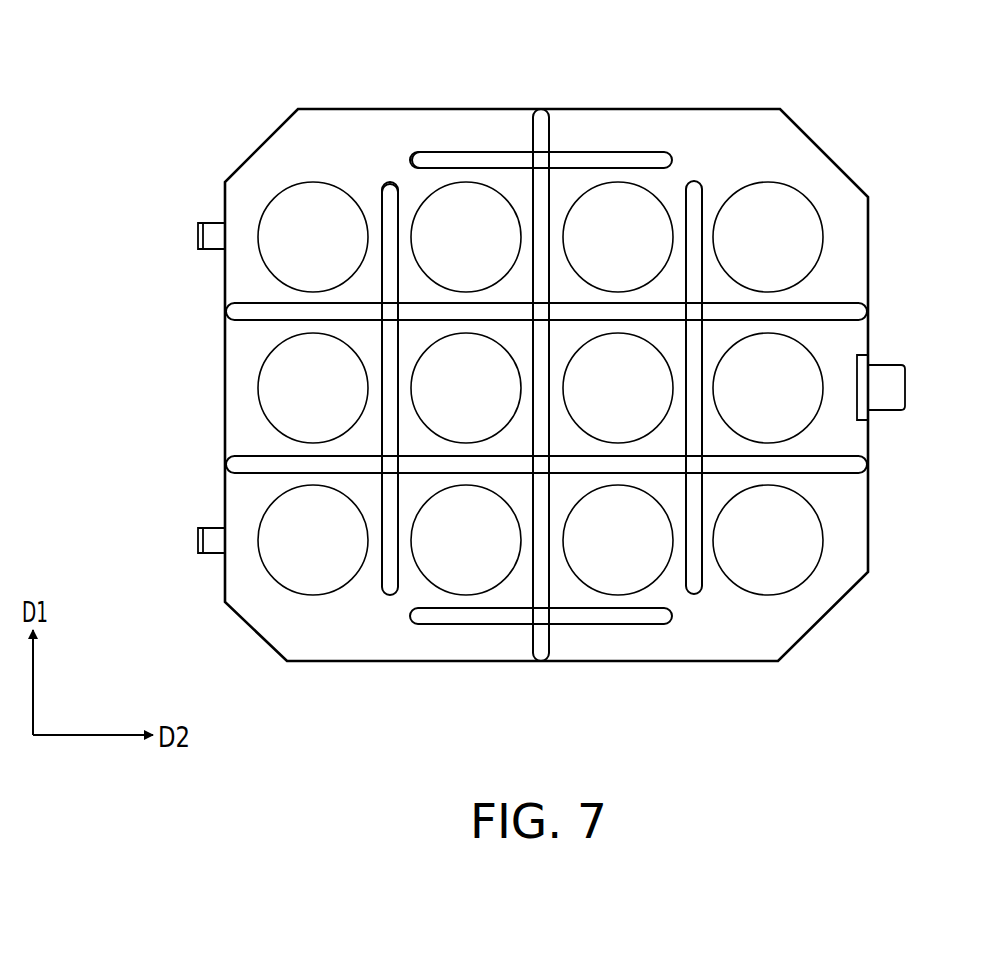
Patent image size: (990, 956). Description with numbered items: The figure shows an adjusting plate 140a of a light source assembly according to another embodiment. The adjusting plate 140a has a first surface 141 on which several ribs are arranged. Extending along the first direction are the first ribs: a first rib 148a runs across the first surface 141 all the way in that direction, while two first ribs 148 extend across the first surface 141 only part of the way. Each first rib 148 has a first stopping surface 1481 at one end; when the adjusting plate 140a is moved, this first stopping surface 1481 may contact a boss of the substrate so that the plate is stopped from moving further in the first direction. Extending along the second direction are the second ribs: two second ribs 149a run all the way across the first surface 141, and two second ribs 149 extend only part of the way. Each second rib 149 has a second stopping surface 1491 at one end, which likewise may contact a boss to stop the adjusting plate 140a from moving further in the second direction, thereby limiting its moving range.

The adjusting plate 140a is at (212, 117).
The first surface 141 is at (805, 160).
The first rib 148 is at (387, 202).
The first stopping surface 1481 is at (386, 178).
The first rib 148a is at (543, 118).
The second rib 149 is at (497, 158).
The second stopping surface 1491 is at (406, 159).
The second rib 149a is at (842, 310).